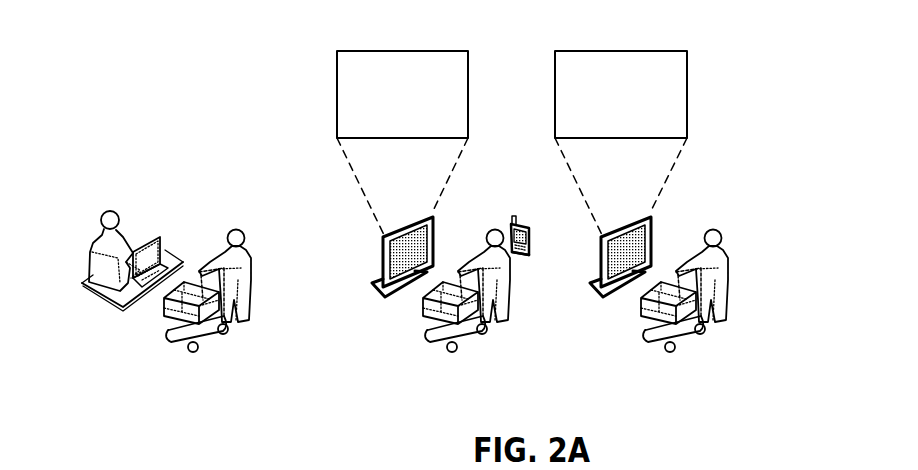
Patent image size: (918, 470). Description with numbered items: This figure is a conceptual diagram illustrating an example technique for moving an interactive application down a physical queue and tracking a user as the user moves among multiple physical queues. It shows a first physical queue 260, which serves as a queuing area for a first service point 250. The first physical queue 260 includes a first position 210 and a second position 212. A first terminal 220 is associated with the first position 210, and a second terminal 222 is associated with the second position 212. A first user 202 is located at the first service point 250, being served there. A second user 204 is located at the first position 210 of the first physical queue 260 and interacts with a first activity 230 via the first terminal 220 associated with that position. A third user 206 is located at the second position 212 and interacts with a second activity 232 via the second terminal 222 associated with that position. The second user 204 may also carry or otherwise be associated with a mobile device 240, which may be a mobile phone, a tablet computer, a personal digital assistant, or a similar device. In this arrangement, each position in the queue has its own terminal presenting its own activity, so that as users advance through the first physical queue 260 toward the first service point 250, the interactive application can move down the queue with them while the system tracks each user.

The first physical queue 260 is at (278, 42).
The first service point 250 is at (180, 200).
The first user 202 is at (237, 275).
The first activity 230 is at (394, 51).
The second activity 232 is at (612, 51).
The first terminal 220 is at (398, 298).
The second terminal 222 is at (600, 272).
The second user 204 is at (500, 231).
The mobile device 240 is at (517, 257).
The third user 206 is at (710, 274).
The first position 210 is at (411, 357).
The second position 212 is at (621, 357).